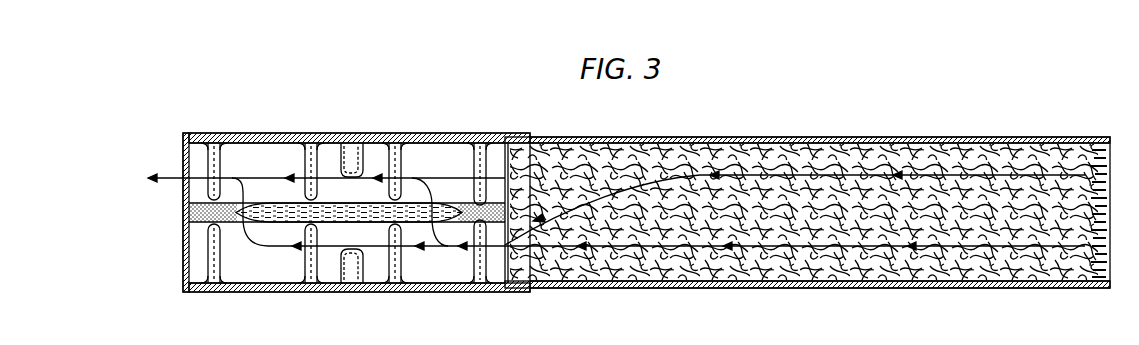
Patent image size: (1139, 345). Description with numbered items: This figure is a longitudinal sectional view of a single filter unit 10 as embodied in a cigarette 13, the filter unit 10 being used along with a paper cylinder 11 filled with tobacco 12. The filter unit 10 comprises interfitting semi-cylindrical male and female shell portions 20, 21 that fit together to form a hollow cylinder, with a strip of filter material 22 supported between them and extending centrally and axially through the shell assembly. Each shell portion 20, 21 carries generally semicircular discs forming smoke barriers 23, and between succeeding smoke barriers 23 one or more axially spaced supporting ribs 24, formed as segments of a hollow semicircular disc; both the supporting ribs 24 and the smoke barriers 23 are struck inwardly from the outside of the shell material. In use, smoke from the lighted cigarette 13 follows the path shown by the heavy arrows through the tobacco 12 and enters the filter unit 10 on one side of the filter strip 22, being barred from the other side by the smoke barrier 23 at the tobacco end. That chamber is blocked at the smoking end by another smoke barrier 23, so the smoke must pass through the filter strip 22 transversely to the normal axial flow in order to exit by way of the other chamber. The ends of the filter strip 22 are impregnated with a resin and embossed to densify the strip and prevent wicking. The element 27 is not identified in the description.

The filter unit 10 is at (179, 239).
The paper cylinder 11 is at (929, 140).
The tobacco 12 is at (1038, 162).
The cigarette 13 is at (822, 130).
The male shell portion 20 is at (263, 276).
The female shell portion 21 is at (258, 146).
The filter strip 22 is at (438, 200).
The smoke barrier 23 is at (486, 158).
The supporting rib 24 is at (388, 160).
The cup-shaped members 27 is at (352, 278).